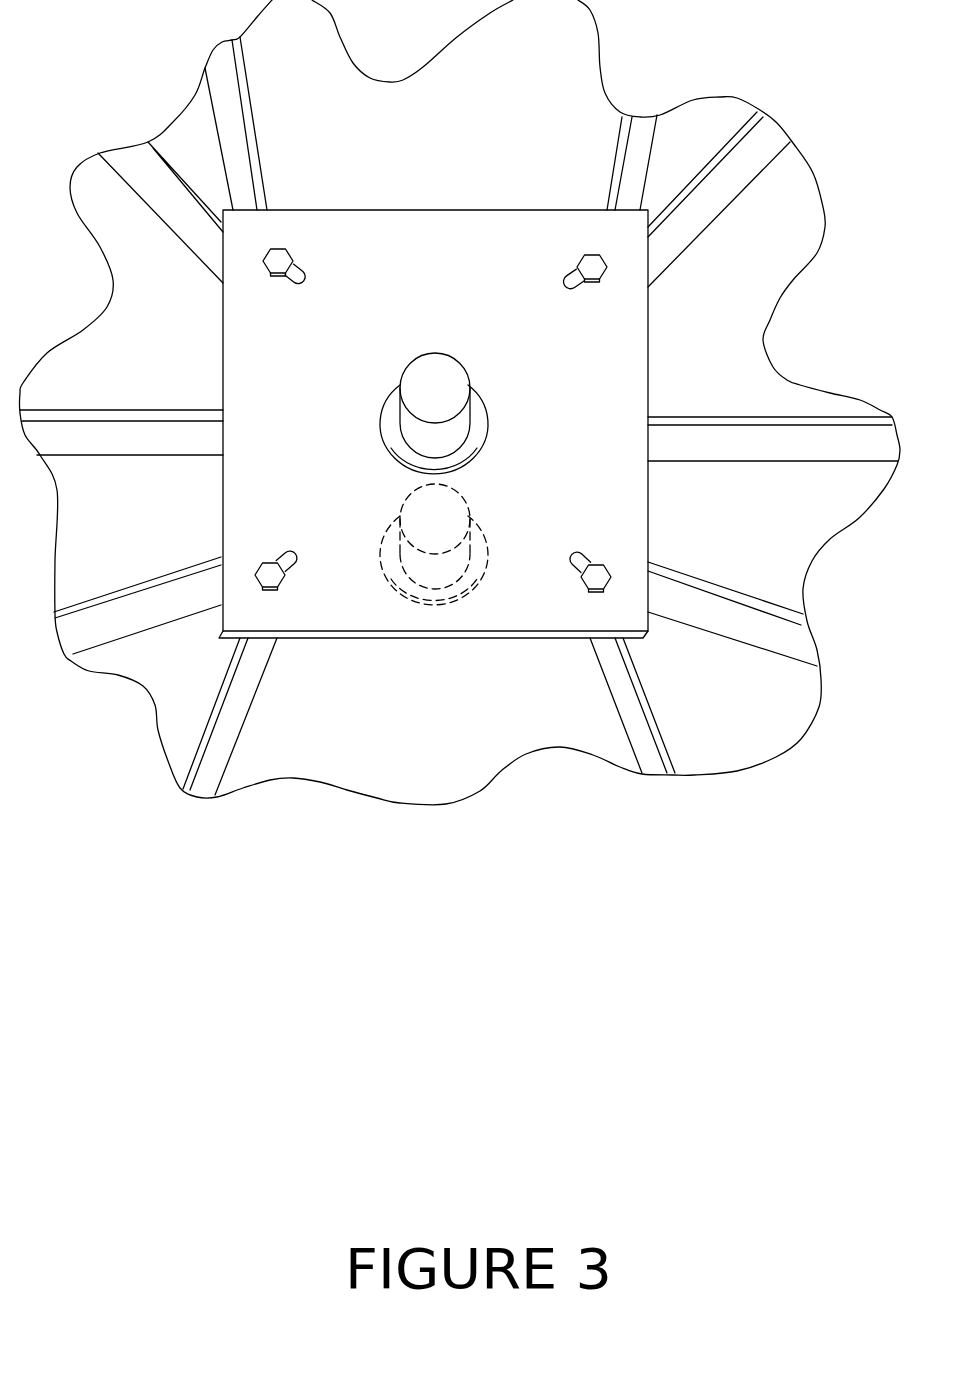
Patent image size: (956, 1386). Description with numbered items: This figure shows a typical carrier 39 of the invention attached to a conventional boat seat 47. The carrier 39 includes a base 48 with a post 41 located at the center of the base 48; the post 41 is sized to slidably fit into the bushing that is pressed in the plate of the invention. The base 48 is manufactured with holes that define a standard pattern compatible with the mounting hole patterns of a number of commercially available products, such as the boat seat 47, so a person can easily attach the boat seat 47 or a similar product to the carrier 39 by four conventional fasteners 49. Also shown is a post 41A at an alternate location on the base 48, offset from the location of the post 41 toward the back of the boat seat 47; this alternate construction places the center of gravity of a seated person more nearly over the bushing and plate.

The carrier 39 is at (359, 424).
The post 41 is at (450, 383).
The post 41A is at (478, 528).
The boat seat 47 is at (378, 778).
The base 48 is at (329, 430).
The fasteners 49 is at (582, 580).